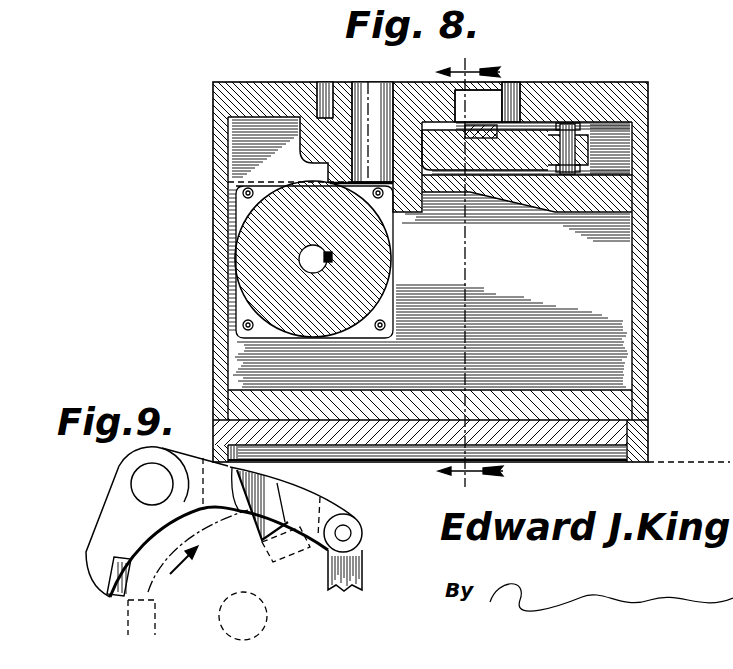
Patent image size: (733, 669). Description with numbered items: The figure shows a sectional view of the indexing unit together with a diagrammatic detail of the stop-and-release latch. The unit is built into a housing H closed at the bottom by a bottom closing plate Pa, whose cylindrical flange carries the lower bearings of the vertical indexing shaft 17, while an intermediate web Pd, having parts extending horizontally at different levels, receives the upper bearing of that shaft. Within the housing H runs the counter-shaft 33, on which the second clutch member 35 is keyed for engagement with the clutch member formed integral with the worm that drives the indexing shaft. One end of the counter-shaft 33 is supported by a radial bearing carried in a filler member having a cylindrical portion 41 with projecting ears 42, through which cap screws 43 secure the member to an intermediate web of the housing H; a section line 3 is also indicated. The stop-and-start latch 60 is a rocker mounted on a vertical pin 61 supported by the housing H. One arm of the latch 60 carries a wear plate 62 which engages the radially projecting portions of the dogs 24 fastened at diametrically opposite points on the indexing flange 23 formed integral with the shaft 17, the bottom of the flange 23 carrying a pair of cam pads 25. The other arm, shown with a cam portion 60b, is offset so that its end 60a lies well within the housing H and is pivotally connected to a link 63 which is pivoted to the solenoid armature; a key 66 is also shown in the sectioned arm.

In FIG. 8, the housing H is at (634, 301).
In FIG. 8, the bottom closing plate Pa is at (633, 440).
In FIG. 8, the intermediate web Pd is at (598, 211).
In FIG. 8, the section line 3 is at (470, 271).
In FIG. 8, the counter-shaft 33 is at (325, 256).
In FIG. 8, the second clutch member 35 is at (255, 269).
In FIG. 8, the cylindrical portion of filler member 41 is at (257, 220).
In FIG. 8, the projecting ears 42 is at (232, 209).
In FIG. 8, the cap screws 43 is at (245, 191).
In FIG. 8, the stop-and-start latch 60 is at (337, 86).
In FIG. 9, the stop-and-start latch 60 is at (117, 522).
In FIG. 8, the end of latch rocker arm 60a is at (540, 130).
In FIG. 9, the end of latch rocker arm 60a is at (323, 503).
In FIG. 9, the cam lobe of lever 60b is at (262, 506).
In FIG. 8, the vertical pin 61 is at (370, 92).
In FIG. 9, the vertical pin 61 is at (140, 480).
In FIG. 9, the wear plate 62 is at (110, 577).
In FIG. 8, the link 63 is at (585, 150).
In FIG. 9, the link 63 is at (347, 573).
In FIG. 8, the key 66 is at (482, 125).
In FIG. 9, the vertical indexing shaft 17 is at (238, 606).
In FIG. 9, the indexing flange 23 is at (157, 584).
In FIG. 9, the dogs 24 is at (142, 617).
In FIG. 9, the cam pads 25 is at (288, 550).